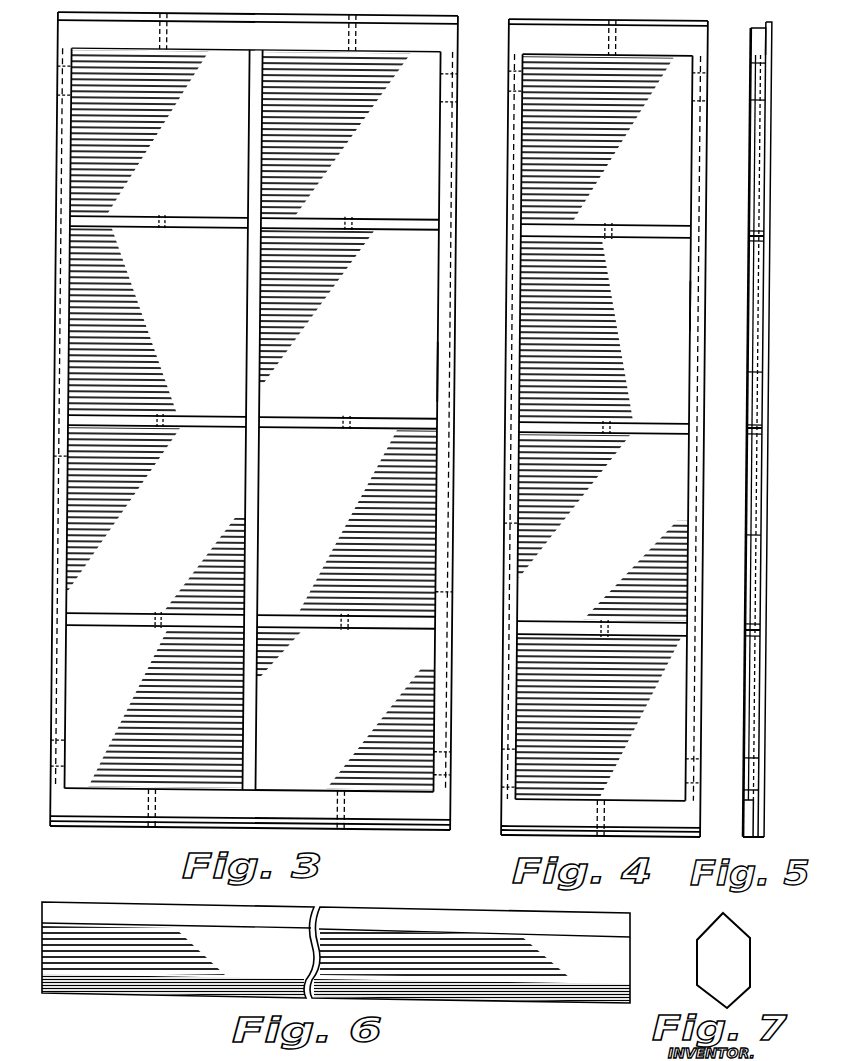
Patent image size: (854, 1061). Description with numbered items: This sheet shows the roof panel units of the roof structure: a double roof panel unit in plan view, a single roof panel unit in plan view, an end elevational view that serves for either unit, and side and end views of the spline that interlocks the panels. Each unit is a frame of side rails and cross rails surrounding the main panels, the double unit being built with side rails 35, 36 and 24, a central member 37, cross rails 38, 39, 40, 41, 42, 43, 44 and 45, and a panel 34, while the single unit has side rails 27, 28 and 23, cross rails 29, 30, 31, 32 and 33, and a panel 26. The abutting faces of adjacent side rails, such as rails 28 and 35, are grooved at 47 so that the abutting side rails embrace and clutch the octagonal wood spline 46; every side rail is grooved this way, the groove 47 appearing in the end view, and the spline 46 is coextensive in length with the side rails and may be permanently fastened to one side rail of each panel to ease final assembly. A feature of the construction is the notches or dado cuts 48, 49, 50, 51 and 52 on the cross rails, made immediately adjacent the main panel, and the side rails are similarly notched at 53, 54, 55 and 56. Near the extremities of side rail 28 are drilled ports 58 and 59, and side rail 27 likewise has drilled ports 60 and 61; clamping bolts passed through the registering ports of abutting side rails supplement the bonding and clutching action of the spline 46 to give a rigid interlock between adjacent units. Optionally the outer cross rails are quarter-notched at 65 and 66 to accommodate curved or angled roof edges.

In FIG. 4, the stile 23 is at (708, 303).
In FIG. 3, the stile 24 is at (456, 325).
In FIG. 4, the roof interlock section 26 is at (662, 311).
In FIG. 5, the roof interlock section 26 is at (768, 194).
In FIG. 4, the side rail 27 is at (513, 146).
In FIG. 4, the side rail 28 is at (694, 168).
In FIG. 4, the top rail 29 is at (682, 37).
In FIG. 5, the top rail 29 is at (762, 43).
In FIG. 4, the bottom rail 30 is at (552, 821).
In FIG. 5, the bottom rail 30 is at (746, 810).
In FIG. 4, the intermediate rail 31 is at (674, 634).
In FIG. 5, the intermediate rail 31 is at (747, 648).
In FIG. 4, the intermediate rail 32 is at (660, 426).
In FIG. 4, the intermediate rail 33 is at (662, 231).
In FIG. 5, the intermediate rail 33 is at (747, 238).
In FIG. 3, the roof interlock section 34 is at (372, 344).
In FIG. 3, the side rail 35 is at (57, 397).
In FIG. 3, the stile 36 is at (447, 375).
In FIG. 3, the mullion 37 is at (261, 492).
In FIG. 3, the top rail 38 is at (254, 26).
In FIG. 3, the bottom rail 39 is at (290, 801).
In FIG. 3, the intermediate rail 40 is at (125, 618).
In FIG. 3, the intermediate rail 41 is at (210, 418).
In FIG. 3, the intermediate rail 42 is at (207, 220).
In FIG. 3, the intermediate rail 43 is at (280, 616).
In FIG. 3, the intermediate rail 44 is at (380, 419).
In FIG. 3, the intermediate rail 45 is at (381, 224).
In FIG. 6, the octagonal wood spline 46 is at (623, 968).
In FIG. 7, the octagonal wood spline 46 is at (740, 972).
In FIG. 3, the groove 47 is at (55, 459).
In FIG. 4, the groove 47 is at (509, 524).
In FIG. 5, the groove 47 is at (763, 373).
In FIG. 4, the dado cut 48 is at (615, 35).
In FIG. 4, the dado cut 49 is at (612, 231).
In FIG. 5, the dado cut 49 is at (765, 236).
In FIG. 4, the dado cut 50 is at (610, 428).
In FIG. 5, the dado cut 50 is at (763, 428).
In FIG. 4, the dado cut 51 is at (574, 622).
In FIG. 5, the dado cut 51 is at (763, 631).
In FIG. 4, the dado cut 52 is at (609, 823).
In FIG. 5, the dado cut 52 is at (747, 431).
In FIG. 4, the side rail notch 53 is at (702, 100).
In FIG. 5, the side rail notch 53 is at (763, 102).
In FIG. 4, the side rail notch 54 is at (701, 758).
In FIG. 5, the side rail notch 54 is at (760, 759).
In FIG. 4, the side rail notch 55 is at (519, 92).
In FIG. 4, the side rail notch 56 is at (511, 748).
In FIG. 4, the drilled port 58 is at (702, 72).
In FIG. 5, the drilled port 58 is at (763, 64).
In FIG. 4, the drilled port 59 is at (699, 783).
In FIG. 5, the drilled port 59 is at (758, 791).
In FIG. 4, the drilled port 60 is at (517, 72).
In FIG. 4, the drilled port 61 is at (508, 788).
In FIG. 3, the quarter-notch 65 is at (399, 23).
In FIG. 4, the quarter-notch 65 is at (586, 11).
In FIG. 5, the quarter-notch 65 is at (760, 28).
In FIG. 3, the quarter-notch 66 is at (360, 827).
In FIG. 4, the quarter-notch 66 is at (502, 829).
In FIG. 5, the quarter-notch 66 is at (747, 837).